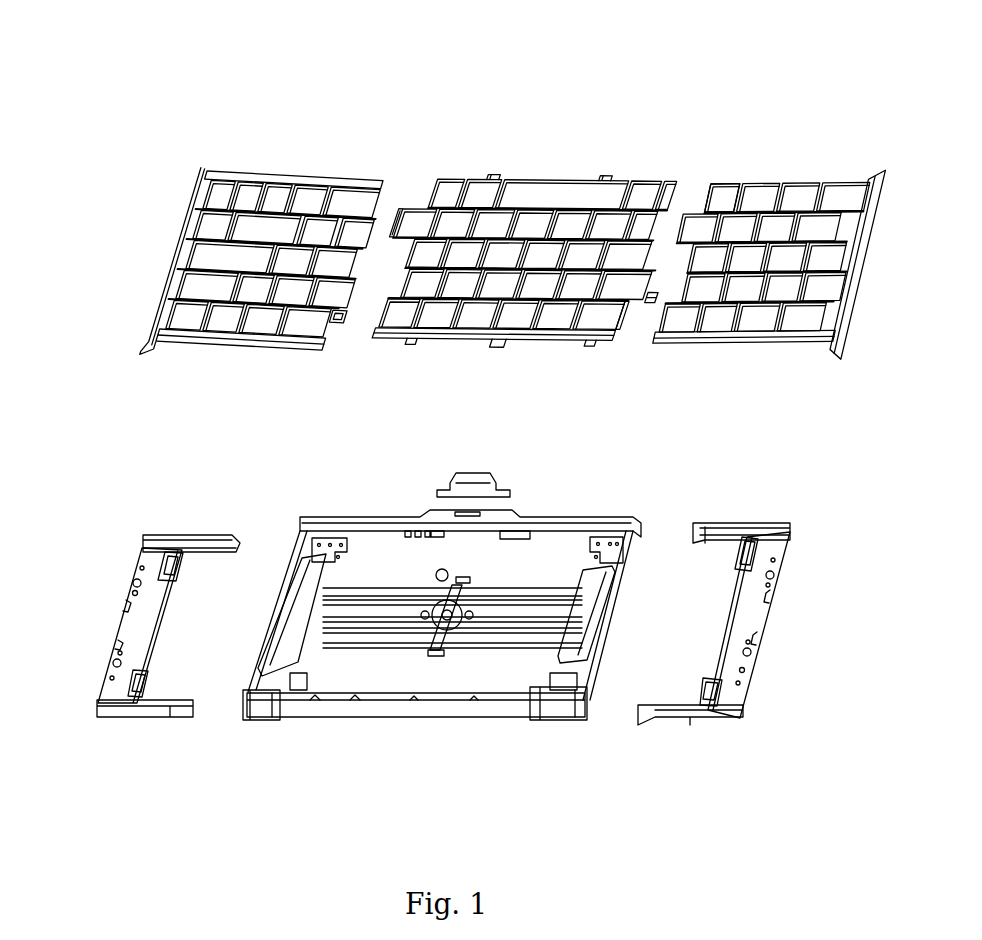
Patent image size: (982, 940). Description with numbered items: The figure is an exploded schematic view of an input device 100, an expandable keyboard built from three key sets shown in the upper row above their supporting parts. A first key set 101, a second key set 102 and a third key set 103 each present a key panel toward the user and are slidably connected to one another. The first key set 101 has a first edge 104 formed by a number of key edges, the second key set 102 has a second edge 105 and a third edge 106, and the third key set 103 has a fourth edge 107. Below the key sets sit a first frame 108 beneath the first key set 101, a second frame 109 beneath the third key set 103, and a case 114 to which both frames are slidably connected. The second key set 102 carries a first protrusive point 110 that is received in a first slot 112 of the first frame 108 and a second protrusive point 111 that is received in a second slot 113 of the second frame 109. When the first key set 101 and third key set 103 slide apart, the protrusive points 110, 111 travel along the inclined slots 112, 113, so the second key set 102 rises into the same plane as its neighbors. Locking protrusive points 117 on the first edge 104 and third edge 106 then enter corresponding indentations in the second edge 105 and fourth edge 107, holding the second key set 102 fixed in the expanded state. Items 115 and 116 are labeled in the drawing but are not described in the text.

The input device 100 is at (541, 40).
The first key set 101 is at (292, 177).
The second key set 102 is at (557, 178).
The third key set 103 is at (805, 180).
The first edge 104 is at (340, 302).
The second edge 105 is at (402, 210).
The third edge 106 is at (618, 323).
The fourth edge 107 is at (708, 200).
The first frame 108 is at (138, 618).
The second frame 109 is at (773, 528).
The first protrusive point 110 is at (497, 175).
The second protrusive point 111 is at (603, 176).
The first slot 112 is at (226, 536).
The second slot 113 is at (710, 527).
The case 114 is at (520, 523).
The holes of left support 115 is at (107, 673).
The holes of right support 116 is at (782, 573).
The locking protrusive points 117 is at (648, 302).